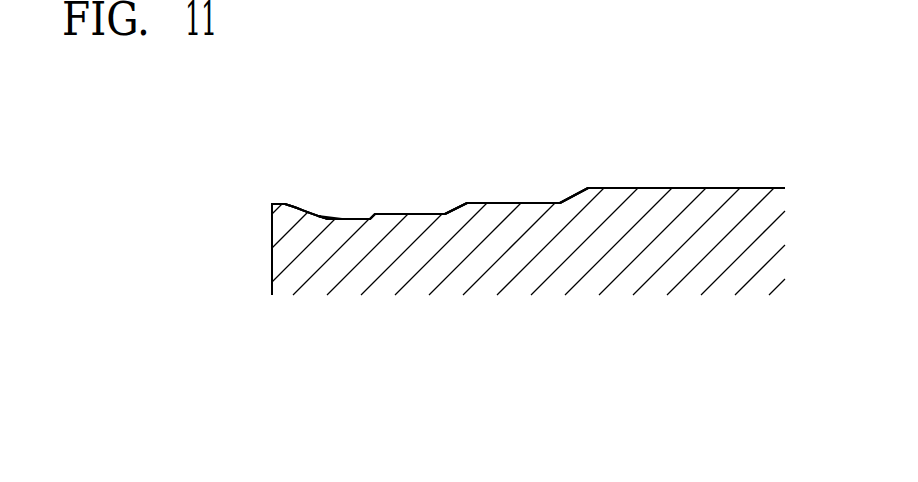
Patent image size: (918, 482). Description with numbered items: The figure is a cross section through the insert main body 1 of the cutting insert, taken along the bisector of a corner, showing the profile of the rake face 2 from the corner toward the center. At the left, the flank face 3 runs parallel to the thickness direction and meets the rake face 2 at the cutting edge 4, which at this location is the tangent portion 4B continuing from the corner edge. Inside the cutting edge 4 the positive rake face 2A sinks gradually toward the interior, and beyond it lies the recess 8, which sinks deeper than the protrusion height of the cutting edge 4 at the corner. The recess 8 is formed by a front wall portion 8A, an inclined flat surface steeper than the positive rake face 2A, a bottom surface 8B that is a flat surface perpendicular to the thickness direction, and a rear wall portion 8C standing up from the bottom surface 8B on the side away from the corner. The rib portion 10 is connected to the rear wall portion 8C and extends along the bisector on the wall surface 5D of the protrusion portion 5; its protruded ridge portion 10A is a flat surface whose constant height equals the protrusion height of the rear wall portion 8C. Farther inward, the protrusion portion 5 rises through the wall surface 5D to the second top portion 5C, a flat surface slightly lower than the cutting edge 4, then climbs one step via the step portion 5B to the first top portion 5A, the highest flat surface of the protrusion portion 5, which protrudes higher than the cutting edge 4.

The insert main body 1 is at (742, 202).
The rake face 2 is at (296, 206).
The positive rake face 2A is at (296, 206).
The flank face 3 is at (272, 255).
The cutting edge 4 is at (271, 203).
The tangent portion 4B is at (271, 203).
The protrusion portion 5 is at (650, 67).
The first top portion 5A is at (628, 187).
The step portion 5B is at (577, 188).
The second top portion 5C is at (513, 202).
The wall surface 5D is at (463, 207).
The recess 8 is at (390, 119).
The front wall portion 8A is at (319, 213).
The bottom surface 8B is at (347, 218).
The rear wall portion 8C is at (375, 214).
The rib portion 10 is at (409, 213).
The protruded ridge portion 10A is at (409, 213).